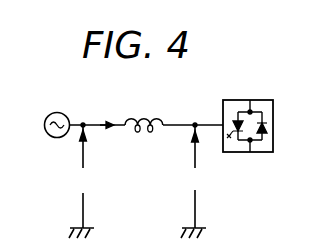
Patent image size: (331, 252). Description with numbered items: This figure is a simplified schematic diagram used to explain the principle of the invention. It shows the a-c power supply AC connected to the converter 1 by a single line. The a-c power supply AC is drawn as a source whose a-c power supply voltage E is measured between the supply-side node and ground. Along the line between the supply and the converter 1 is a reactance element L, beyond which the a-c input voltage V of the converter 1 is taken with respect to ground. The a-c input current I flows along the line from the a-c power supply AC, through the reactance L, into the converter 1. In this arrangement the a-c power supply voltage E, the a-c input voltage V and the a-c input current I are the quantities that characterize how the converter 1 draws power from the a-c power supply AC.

The converter 1 is at (273, 103).
The a-c power supply AC is at (57, 113).
The a-c input current I is at (106, 112).
The line reactance L(=X) L is at (161, 112).
The a-c power supply voltage E is at (81, 180).
The a-c input voltage V is at (193, 180).